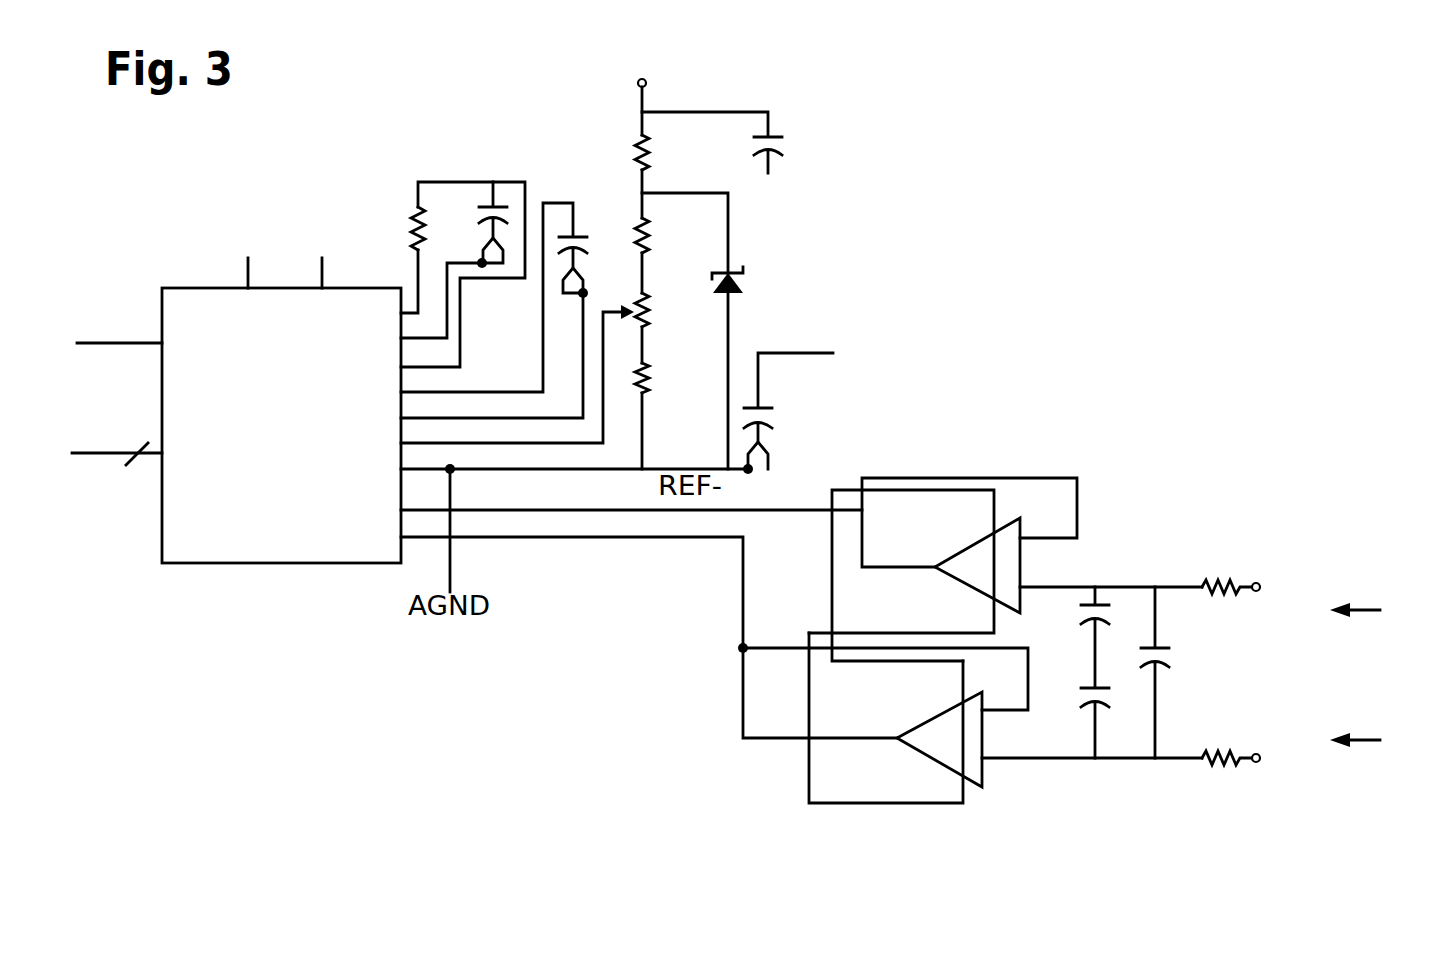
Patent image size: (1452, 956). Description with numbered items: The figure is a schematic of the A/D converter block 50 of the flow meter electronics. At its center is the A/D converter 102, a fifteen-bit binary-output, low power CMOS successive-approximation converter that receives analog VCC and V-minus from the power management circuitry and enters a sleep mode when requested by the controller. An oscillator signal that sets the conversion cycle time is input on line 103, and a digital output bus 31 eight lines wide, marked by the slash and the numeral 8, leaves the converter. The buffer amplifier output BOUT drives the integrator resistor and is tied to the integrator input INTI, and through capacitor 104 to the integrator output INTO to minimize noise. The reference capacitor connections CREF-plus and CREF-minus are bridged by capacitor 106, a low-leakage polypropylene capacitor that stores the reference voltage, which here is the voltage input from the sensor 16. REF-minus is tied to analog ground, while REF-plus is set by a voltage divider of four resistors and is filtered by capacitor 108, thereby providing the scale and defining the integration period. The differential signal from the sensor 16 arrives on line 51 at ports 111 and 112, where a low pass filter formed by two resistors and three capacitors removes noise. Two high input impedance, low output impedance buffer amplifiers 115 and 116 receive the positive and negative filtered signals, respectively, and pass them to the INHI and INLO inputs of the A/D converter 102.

The A/D converter 102 is at (270, 448).
The oscillator input line 103 is at (125, 343).
The 8-bit data bus 31 is at (105, 453).
The bus width indicator 8 is at (126, 469).
The capacitor 104 is at (502, 197).
The capacitor 106 is at (590, 242).
The capacitor 108 is at (810, 408).
The A/D converter block 50 is at (933, 203).
The buffer amplifier 115 is at (1017, 443).
The buffer amplifier 116 is at (1012, 828).
The line 51 is at (1163, 818).
The port 111 is at (1258, 592).
The port 112 is at (1258, 763).
The sensor 16 is at (1388, 675).